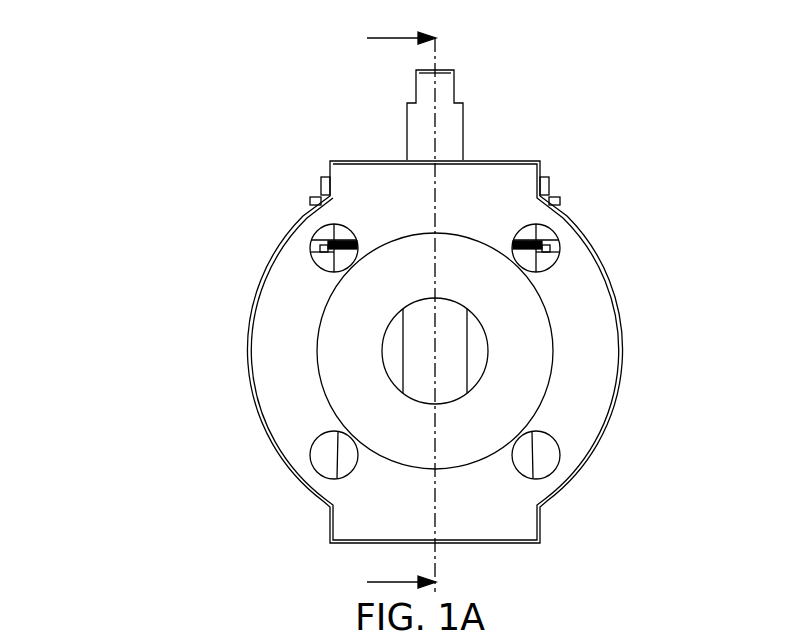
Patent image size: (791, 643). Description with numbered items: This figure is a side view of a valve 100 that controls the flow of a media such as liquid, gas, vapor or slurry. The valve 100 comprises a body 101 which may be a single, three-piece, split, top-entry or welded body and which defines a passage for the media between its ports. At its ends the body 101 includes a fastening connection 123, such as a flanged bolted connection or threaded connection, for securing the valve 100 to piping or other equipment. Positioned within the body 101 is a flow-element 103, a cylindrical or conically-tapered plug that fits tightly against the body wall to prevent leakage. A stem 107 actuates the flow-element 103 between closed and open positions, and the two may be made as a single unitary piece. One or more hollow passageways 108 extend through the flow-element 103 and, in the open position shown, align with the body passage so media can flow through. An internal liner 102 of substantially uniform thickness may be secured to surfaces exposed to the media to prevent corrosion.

The valve 100 is at (373, 301).
The body 101 is at (507, 198).
The liner 102 is at (488, 420).
The flow-element 103 is at (477, 351).
The stem 107 is at (456, 134).
The hollow passageways 108 is at (395, 339).
The fastening connection 123 is at (305, 222).